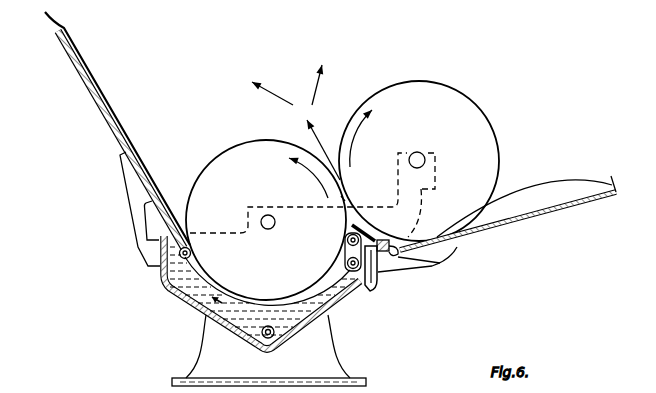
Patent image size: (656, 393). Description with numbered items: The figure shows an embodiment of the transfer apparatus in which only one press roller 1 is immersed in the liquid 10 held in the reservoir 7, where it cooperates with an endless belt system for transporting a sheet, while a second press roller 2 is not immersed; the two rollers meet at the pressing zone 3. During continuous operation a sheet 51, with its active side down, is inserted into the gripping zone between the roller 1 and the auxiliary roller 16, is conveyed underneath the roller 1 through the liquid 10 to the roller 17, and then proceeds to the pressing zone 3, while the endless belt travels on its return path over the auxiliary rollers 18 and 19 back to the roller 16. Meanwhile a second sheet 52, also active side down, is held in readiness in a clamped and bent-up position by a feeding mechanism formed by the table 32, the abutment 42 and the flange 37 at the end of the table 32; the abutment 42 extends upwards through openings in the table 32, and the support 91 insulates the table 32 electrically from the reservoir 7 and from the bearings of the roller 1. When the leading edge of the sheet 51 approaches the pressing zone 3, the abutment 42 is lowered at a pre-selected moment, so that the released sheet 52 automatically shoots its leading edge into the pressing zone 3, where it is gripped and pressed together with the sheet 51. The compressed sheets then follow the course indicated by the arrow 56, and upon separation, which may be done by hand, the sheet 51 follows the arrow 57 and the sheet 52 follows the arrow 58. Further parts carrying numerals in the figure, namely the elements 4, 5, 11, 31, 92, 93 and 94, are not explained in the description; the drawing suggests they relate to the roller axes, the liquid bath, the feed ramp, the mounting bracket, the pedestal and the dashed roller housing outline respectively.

The press roller 1 is at (263, 147).
The second roller 2 is at (363, 108).
The pressing zone 3 is at (344, 198).
The axis of first roller 4 is at (266, 215).
The axis of second roller 5 is at (417, 152).
The reservoir 7 is at (183, 298).
The liquid 10 is at (344, 288).
The liquid bath 11 is at (306, 312).
The auxiliary roller 16 is at (191, 253).
The roller 17 is at (347, 242).
The auxiliary roller 18 is at (347, 264).
The auxiliary roller 19 is at (268, 326).
The feed ramp 31 is at (84, 88).
The table 32 is at (515, 228).
The flange 37 is at (610, 198).
The abutment 42 is at (385, 257).
The sheet 51 is at (106, 105).
The sheet 52 is at (544, 182).
The arrow 56 is at (314, 131).
The arrow 57 is at (276, 97).
The arrow 58 is at (314, 100).
The support 91 is at (440, 260).
The mounting bracket 92 is at (128, 196).
The pedestal 93 is at (210, 353).
The roller housing outline 94 is at (436, 189).